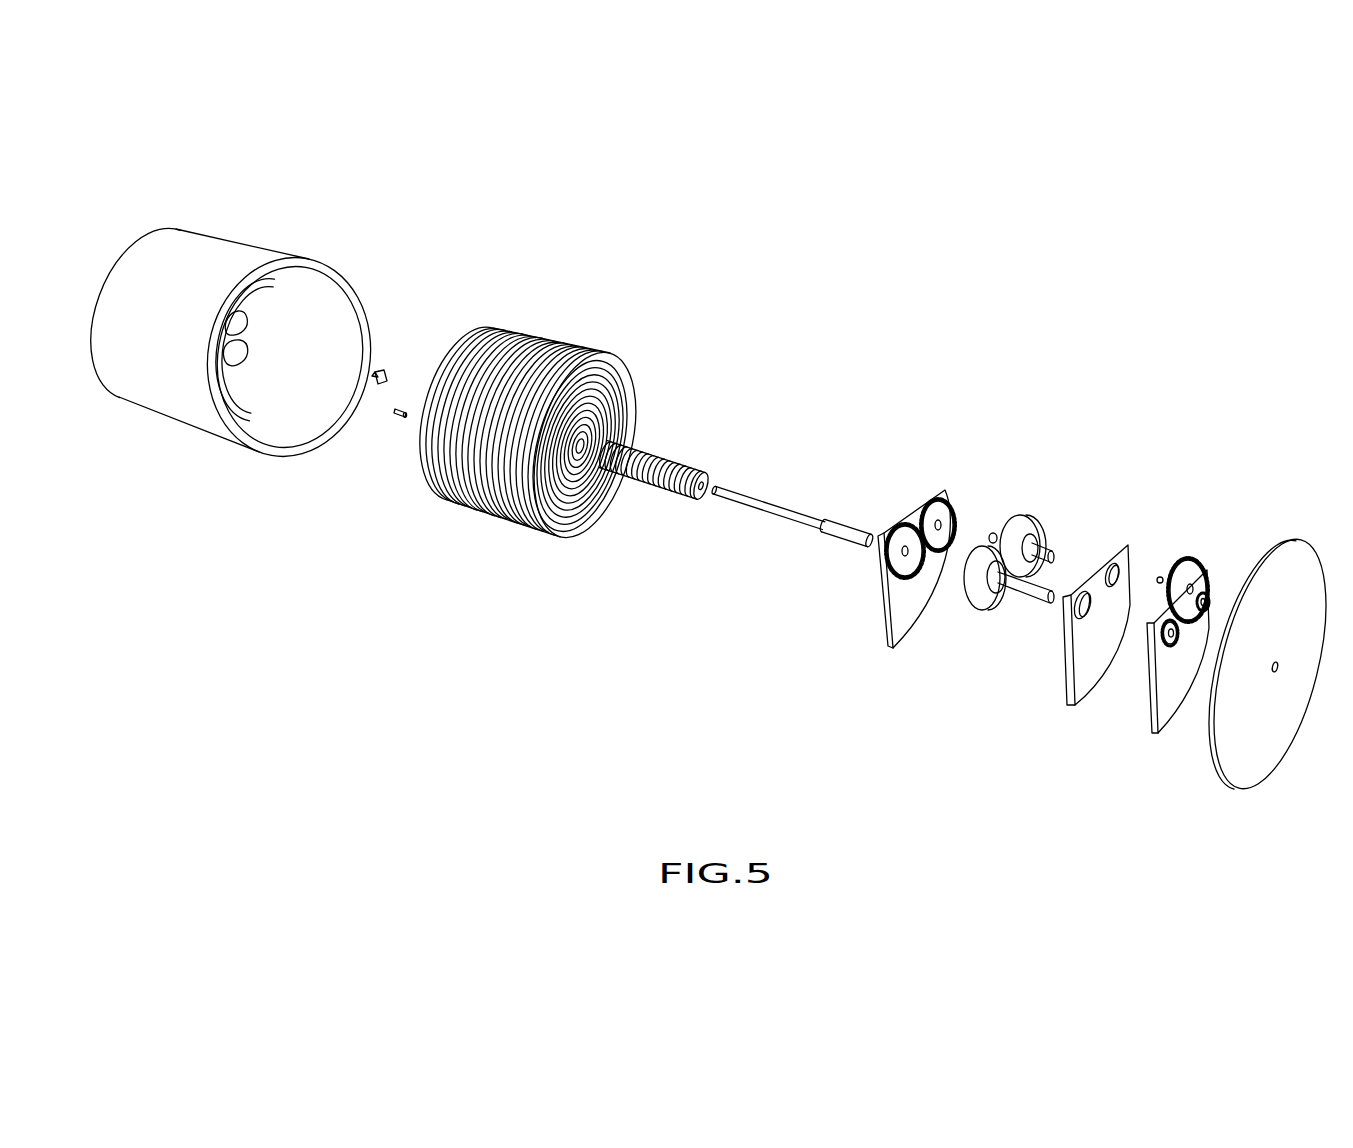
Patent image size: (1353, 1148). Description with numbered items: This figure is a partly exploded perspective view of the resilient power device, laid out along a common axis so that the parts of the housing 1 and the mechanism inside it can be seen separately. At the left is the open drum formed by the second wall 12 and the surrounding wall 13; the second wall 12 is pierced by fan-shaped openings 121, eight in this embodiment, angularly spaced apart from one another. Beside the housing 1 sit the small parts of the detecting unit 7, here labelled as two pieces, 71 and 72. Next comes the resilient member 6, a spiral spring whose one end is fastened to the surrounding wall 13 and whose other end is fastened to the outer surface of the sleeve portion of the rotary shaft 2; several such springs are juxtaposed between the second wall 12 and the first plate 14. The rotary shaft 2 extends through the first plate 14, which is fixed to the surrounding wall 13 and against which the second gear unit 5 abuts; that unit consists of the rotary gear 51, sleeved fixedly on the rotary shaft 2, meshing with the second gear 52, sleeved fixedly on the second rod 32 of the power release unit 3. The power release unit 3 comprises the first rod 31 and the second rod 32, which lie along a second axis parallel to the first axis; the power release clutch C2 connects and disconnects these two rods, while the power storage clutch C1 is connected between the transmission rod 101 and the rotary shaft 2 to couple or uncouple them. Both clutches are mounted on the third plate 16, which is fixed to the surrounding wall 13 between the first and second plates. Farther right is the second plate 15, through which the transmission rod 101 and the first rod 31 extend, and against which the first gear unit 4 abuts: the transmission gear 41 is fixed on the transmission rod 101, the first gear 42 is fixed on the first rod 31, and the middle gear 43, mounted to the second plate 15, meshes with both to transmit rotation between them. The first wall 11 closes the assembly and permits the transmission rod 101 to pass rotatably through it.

The housing 1 is at (227, 309).
The second wall 12 is at (133, 253).
The surrounding wall 13 is at (177, 397).
The openings 121 is at (247, 325).
The detecting unit 7 is at (478, 266).
The fastener block 71 is at (381, 370).
The pin 72 is at (403, 406).
The resilient member 6 is at (551, 339).
The rotary shaft 2 is at (737, 443).
The second gear unit 5 is at (927, 526).
The first plate 14 is at (903, 630).
The rotary gear 51 is at (897, 527).
The second gear 52 is at (953, 498).
The power release unit 3 is at (1028, 535).
The power storage clutch C1 is at (975, 602).
The power release clutch C2 is at (1017, 522).
The first rod 31 is at (1065, 533).
The second rod 32 is at (993, 533).
The transmission rod 101 is at (1037, 593).
The third plate 16 is at (1082, 683).
The first gear unit 4 is at (1186, 615).
The second plate 15 is at (1157, 720).
The middle gear 43 is at (1182, 563).
The first gear 42 is at (1205, 578).
The transmission gear 41 is at (1172, 647).
The first wall 11 is at (1307, 557).